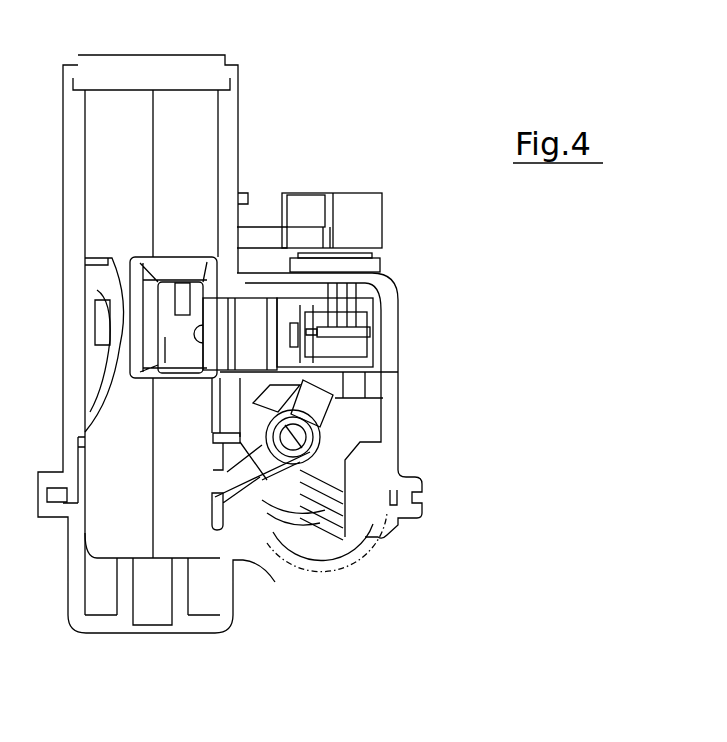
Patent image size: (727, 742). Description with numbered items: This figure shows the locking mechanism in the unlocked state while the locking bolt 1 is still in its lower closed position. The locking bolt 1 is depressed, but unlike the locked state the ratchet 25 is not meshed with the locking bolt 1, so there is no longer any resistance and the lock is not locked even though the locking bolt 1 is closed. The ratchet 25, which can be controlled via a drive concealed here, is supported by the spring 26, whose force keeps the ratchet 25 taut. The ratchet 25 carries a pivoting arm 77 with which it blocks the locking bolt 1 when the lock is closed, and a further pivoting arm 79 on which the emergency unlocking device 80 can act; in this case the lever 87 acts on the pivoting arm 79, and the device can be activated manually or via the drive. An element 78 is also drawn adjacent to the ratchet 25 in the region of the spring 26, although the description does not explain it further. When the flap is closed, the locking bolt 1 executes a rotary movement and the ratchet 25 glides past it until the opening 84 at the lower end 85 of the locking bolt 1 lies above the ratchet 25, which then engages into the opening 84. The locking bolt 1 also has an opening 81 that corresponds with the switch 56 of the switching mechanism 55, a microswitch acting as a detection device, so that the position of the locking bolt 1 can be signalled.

The locking bolt 1 is at (198, 112).
The ratchet 25 is at (243, 470).
The spring 26 is at (325, 492).
The switching mechanism 55 is at (240, 325).
The switch 56 is at (203, 323).
The pivoting arm 77 is at (255, 465).
The spring 78 is at (285, 490).
The pivoting arm 79 is at (325, 392).
The emergency unlocking device 80 is at (370, 213).
The opening 81 is at (178, 347).
The opening 84 is at (210, 512).
The lower end 85 is at (205, 542).
The lever 87 is at (372, 393).